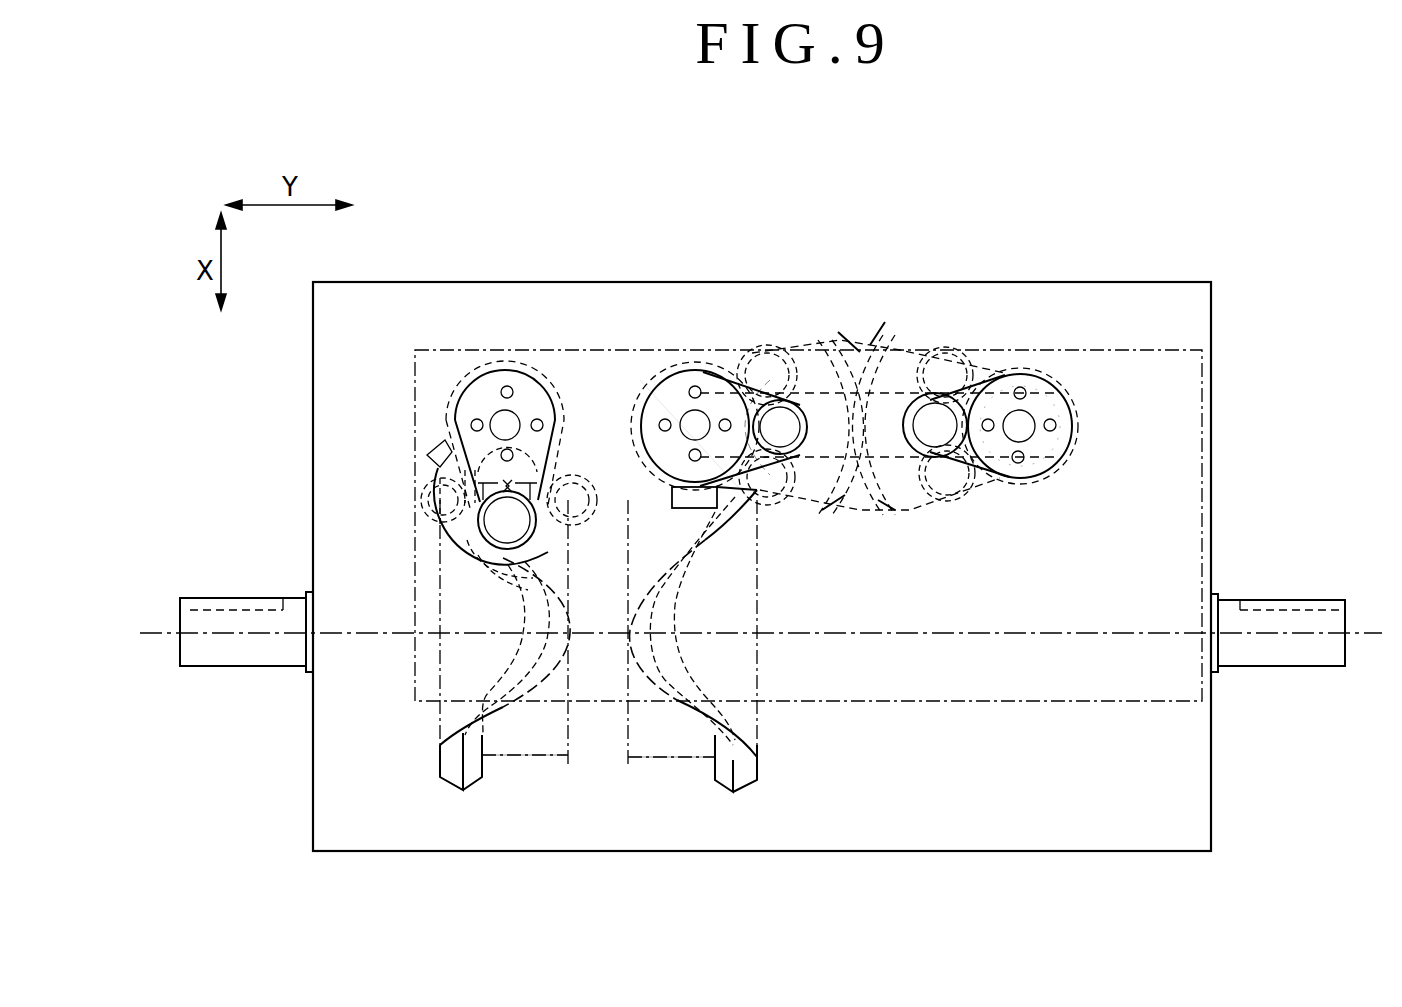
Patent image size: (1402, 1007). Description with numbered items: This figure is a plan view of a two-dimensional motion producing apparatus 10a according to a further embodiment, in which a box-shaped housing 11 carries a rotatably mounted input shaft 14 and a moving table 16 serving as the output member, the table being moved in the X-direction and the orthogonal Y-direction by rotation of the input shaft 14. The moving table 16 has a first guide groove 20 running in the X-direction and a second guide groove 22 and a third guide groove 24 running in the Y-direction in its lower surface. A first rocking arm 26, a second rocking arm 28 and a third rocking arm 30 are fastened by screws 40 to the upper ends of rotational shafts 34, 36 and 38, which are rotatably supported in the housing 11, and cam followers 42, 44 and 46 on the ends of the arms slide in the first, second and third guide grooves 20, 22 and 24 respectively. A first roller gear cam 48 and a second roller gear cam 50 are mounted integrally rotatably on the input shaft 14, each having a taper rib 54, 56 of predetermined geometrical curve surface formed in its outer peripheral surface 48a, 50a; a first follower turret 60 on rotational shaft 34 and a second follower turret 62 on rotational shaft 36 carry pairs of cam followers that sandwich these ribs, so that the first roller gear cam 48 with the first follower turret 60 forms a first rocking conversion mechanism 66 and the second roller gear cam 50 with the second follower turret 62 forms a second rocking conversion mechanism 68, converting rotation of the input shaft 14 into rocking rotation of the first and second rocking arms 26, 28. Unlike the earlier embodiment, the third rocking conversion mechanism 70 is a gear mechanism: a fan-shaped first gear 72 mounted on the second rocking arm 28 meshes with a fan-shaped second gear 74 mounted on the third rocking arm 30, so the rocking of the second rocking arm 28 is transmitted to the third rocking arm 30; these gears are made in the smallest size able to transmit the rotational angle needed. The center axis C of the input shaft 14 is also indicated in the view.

The two-dimensional motion producing apparatus 10a is at (1088, 243).
The housing 11 is at (330, 782).
The input shaft 14 is at (218, 655).
The moving table 16 is at (992, 695).
The first guide groove 20 is at (500, 573).
The second guide groove 22 is at (810, 525).
The third guide groove 24 is at (922, 400).
The first rocking arm 26 is at (470, 405).
The second rocking arm 28 is at (652, 410).
The third rocking arm 30 is at (1040, 370).
The rotational shaft 34 is at (515, 410).
The rotational shaft 36 is at (664, 430).
The rotational shaft 38 is at (1050, 462).
The screw 40 is at (507, 385).
The cam follower 42 is at (500, 512).
The cam follower 44 is at (795, 405).
The cam follower 46 is at (935, 425).
The first roller gear cam 48 is at (438, 720).
The outer peripheral surface 48a is at (540, 762).
The second roller gear cam 50 is at (627, 720).
The outer peripheral surface 50a is at (682, 762).
The taper rib 54 is at (477, 793).
The taper rib 56 is at (748, 795).
The first follower turret 60 is at (530, 365).
The second follower turret 62 is at (700, 362).
The first rocking conversion mechanism 66 is at (398, 442).
The second rocking conversion mechanism 68 is at (624, 372).
The third rocking conversion mechanism 70 is at (875, 540).
The first gear 72 is at (850, 350).
The second gear 74 is at (880, 345).
The center axis C is at (370, 638).